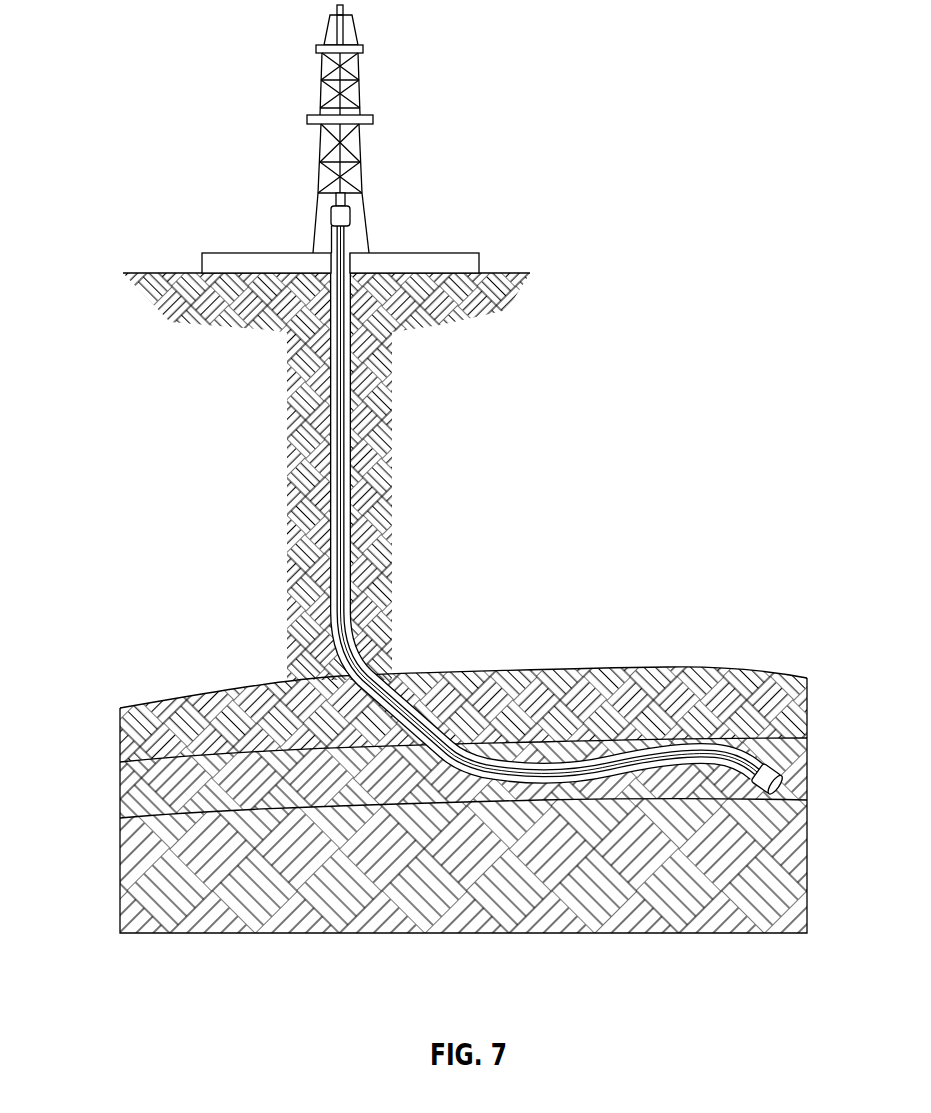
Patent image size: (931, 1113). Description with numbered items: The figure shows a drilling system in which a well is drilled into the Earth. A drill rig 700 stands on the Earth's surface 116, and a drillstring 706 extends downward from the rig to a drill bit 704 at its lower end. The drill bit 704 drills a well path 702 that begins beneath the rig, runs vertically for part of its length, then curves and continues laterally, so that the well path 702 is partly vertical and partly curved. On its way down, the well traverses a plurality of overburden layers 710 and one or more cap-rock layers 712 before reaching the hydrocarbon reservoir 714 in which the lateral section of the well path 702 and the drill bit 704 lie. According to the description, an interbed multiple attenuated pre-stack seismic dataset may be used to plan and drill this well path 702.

The Earth's surface 116 is at (518, 272).
The drill rig 700 is at (365, 148).
The well path 702 is at (330, 412).
The drill bit 704 is at (766, 768).
The drillstring 706 is at (345, 238).
The overburden layers 710 is at (385, 404).
The cap-rock layers 712 is at (130, 728).
The hydrocarbon reservoir 714 is at (130, 800).